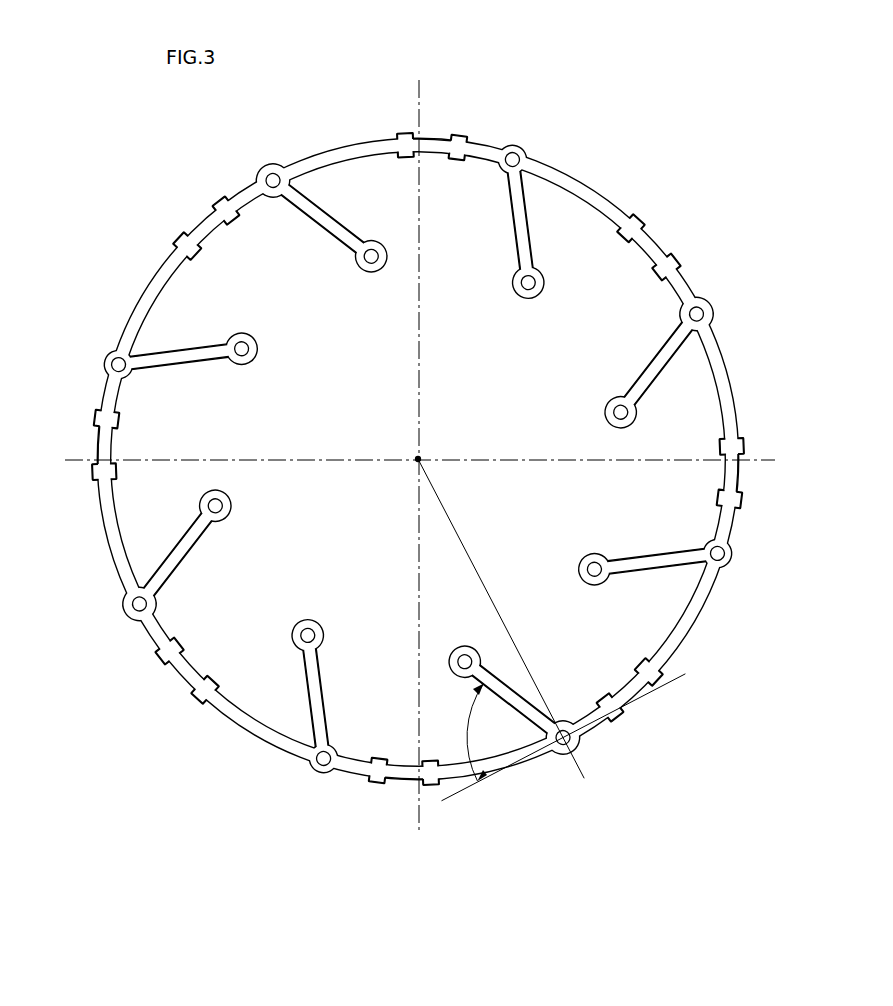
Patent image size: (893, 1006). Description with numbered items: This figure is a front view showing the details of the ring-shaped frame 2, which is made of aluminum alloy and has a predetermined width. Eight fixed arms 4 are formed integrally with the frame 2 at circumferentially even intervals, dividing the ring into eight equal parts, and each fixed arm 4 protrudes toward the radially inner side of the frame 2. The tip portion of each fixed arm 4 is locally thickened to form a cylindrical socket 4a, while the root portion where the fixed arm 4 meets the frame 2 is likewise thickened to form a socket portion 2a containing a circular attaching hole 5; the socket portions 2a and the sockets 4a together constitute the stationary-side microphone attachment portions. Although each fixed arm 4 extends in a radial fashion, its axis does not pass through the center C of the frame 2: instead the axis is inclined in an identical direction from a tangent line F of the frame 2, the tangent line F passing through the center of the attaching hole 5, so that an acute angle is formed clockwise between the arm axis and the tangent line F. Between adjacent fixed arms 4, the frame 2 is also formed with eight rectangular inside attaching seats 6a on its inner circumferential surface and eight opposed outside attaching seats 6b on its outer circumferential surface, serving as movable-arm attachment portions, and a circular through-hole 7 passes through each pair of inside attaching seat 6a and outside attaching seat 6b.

The frame 2 is at (248, 738).
The socket portion 2a is at (265, 173).
The fixed arm 4 is at (343, 228).
The cylindrical socket 4a is at (376, 272).
The attaching hole 5 is at (517, 152).
The inside attaching seat 6a is at (447, 153).
The outside attaching seat 6b is at (428, 136).
The through-hole 7 is at (203, 230).
The center C is at (414, 462).
The tangent line F is at (453, 797).